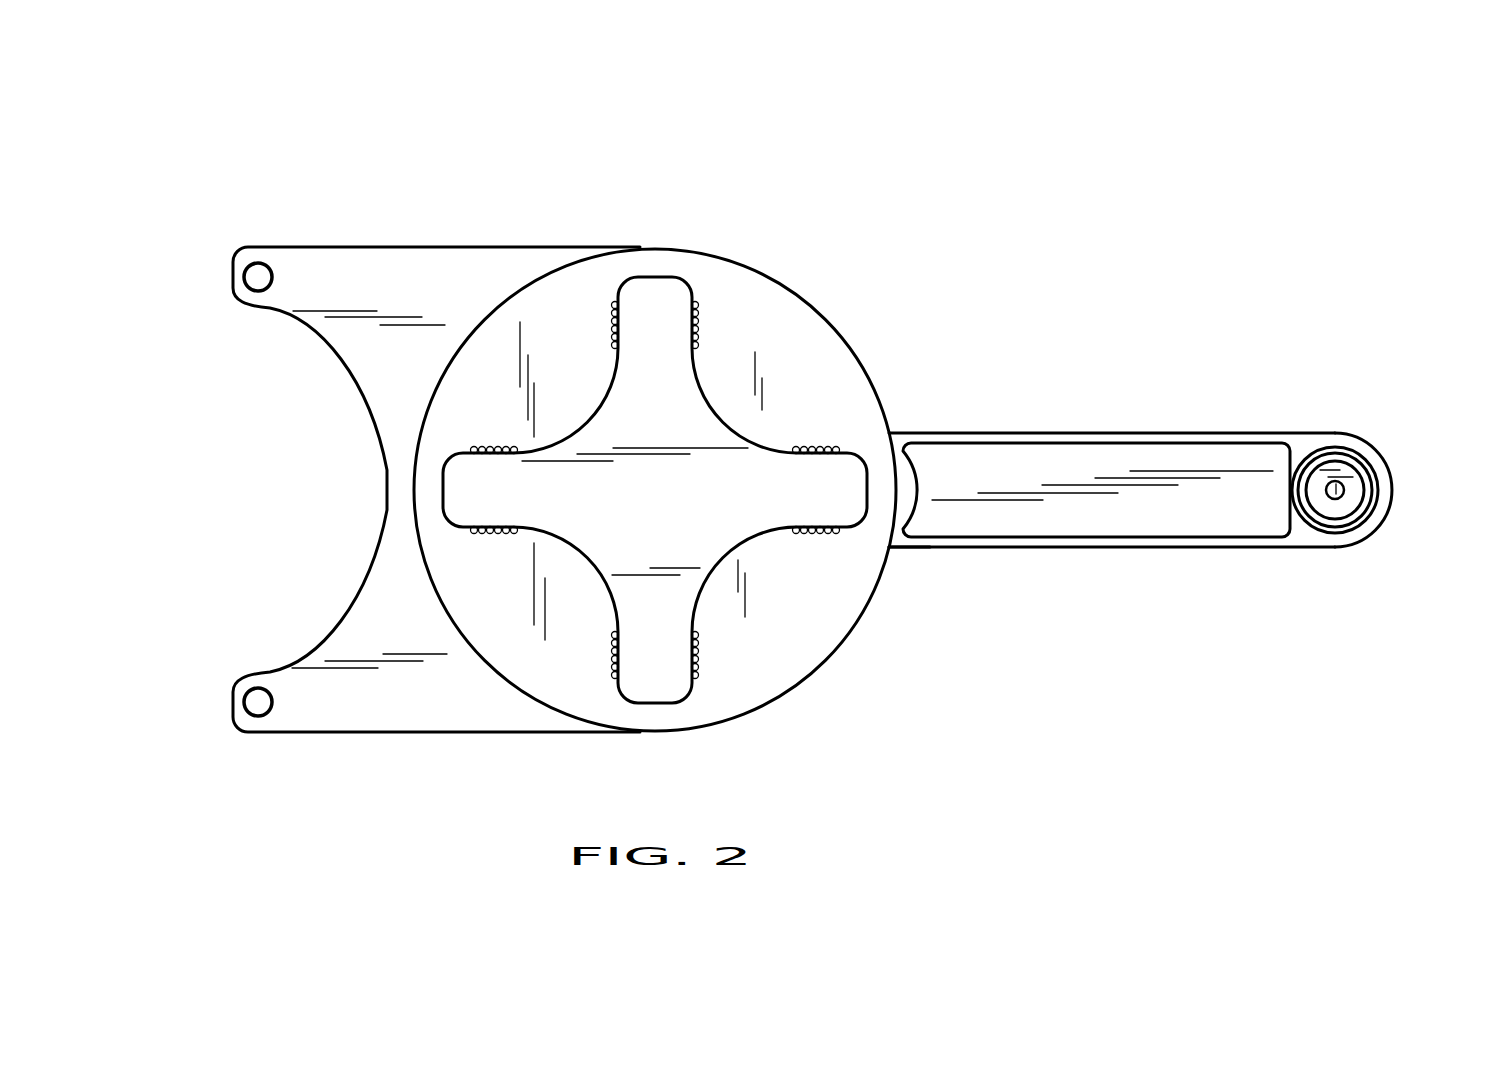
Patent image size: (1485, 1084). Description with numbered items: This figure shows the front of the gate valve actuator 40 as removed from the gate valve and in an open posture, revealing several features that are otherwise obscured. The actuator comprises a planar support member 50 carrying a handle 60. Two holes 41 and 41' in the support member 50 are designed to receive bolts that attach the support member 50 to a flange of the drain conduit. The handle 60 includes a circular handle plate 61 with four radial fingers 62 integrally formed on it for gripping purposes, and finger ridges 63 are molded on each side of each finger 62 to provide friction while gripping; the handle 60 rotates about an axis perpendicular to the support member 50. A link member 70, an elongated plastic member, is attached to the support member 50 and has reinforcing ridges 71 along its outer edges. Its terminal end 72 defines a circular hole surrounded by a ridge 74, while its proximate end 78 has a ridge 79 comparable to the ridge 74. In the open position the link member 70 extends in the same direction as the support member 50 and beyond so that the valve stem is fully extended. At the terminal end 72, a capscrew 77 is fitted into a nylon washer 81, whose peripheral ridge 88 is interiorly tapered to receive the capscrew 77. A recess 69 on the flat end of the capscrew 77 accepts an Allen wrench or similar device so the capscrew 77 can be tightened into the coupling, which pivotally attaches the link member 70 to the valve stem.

The gate valve actuator 40 is at (771, 150).
The hole 41 is at (204, 262).
The hole 41' is at (205, 686).
The planar support member 50 is at (388, 458).
The handle 60 is at (587, 508).
The circular handle plate 61 is at (605, 508).
The fingers 62 is at (638, 747).
The finger ridges 63 is at (612, 317).
The recess 69 is at (1343, 498).
The link member 70 is at (1001, 428).
The reinforcing ridges 71 is at (1125, 433).
The terminal end 72 is at (1323, 570).
The ridge 74 is at (1308, 445).
The capscrew 77 is at (1351, 490).
The proximate end 78 is at (903, 548).
The ridge 79 is at (898, 468).
The nylon washer 81 is at (1373, 468).
The peripheral ridge 88 is at (1342, 463).